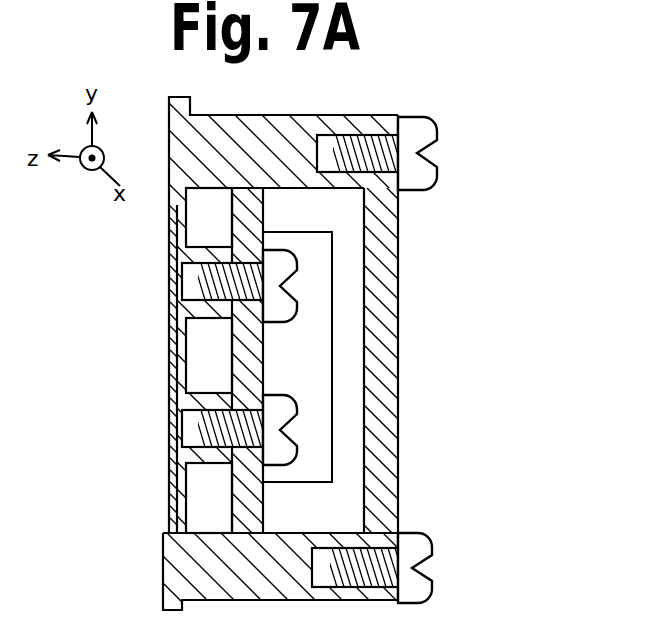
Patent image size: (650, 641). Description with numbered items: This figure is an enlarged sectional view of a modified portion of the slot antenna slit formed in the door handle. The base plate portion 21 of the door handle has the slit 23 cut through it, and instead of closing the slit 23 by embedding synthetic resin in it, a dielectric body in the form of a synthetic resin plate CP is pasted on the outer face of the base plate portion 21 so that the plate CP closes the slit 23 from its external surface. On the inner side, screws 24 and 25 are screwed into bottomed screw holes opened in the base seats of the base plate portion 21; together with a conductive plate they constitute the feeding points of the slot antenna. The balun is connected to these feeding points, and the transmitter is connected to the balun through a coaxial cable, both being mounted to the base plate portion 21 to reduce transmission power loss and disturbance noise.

The base plate portion 21 is at (165, 533).
The slit 23 is at (175, 362).
The synthetic resin plate CP is at (170, 323).
The screw 24 is at (333, 244).
The screw 25 is at (300, 462).